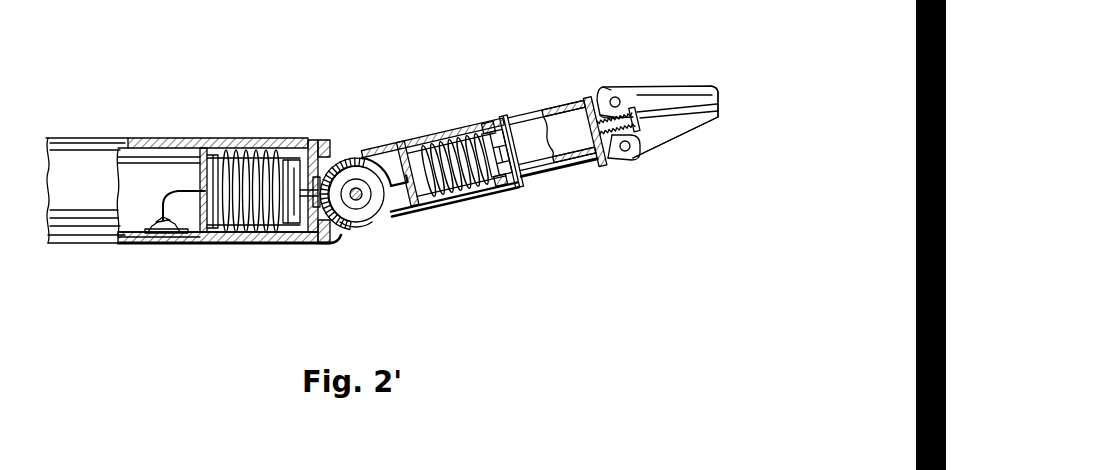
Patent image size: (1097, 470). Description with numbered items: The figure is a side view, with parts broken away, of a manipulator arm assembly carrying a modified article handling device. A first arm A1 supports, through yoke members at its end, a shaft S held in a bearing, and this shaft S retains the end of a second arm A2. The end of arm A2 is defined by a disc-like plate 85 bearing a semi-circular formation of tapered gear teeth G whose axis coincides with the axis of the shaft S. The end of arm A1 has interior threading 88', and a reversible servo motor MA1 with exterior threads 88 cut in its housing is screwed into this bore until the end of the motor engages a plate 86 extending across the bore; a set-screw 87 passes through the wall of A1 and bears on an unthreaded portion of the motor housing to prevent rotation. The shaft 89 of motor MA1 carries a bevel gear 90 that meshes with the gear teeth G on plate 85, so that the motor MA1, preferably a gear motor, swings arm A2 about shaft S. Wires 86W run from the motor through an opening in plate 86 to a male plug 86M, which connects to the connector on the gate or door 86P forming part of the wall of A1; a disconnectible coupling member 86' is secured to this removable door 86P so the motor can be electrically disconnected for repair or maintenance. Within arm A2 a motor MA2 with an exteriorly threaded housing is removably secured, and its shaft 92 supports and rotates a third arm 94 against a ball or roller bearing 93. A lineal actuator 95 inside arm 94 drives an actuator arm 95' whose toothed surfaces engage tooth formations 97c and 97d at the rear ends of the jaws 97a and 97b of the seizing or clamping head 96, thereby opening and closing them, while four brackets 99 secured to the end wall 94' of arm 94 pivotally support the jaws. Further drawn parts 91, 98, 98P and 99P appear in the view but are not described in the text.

The first arm A1 is at (97, 140).
The second arm A2 is at (396, 140).
The plate 86 is at (224, 207).
The disconnectible coupling member 86' is at (143, 269).
The gate or door 86P is at (165, 243).
The male plug 86M is at (163, 222).
The wires 86W is at (188, 190).
The interior threading 88' is at (197, 161).
The exterior threads 88 is at (251, 161).
The reversible servo motor MA1 is at (289, 235).
The shaft 89 is at (307, 190).
The set-screw 87 is at (293, 244).
The bevel gear 90 is at (328, 160).
The disc-like plate 85 is at (381, 216).
The shaft S is at (357, 186).
The tapered gear teeth G is at (360, 231).
The partition wall 91 is at (411, 146).
The motor MA2 is at (437, 205).
The shaft 92 is at (472, 128).
The ball or roller bearing 93 is at (500, 198).
The third arm 94 is at (552, 123).
The end wall 94' is at (559, 195).
The lineal actuator 95 is at (582, 151).
The actuator arm 95' is at (609, 95).
The seizing head 96 is at (696, 83).
The jaw 97a is at (718, 108).
The jaw 97b is at (672, 139).
The tooth formation 97c is at (607, 105).
The tooth formation 97d is at (619, 160).
The upper jaw 98 is at (613, 87).
The upper jaw pivot pin 98P is at (627, 100).
The brackets 99 is at (613, 160).
The lower jaw pivot pin 99P is at (629, 160).